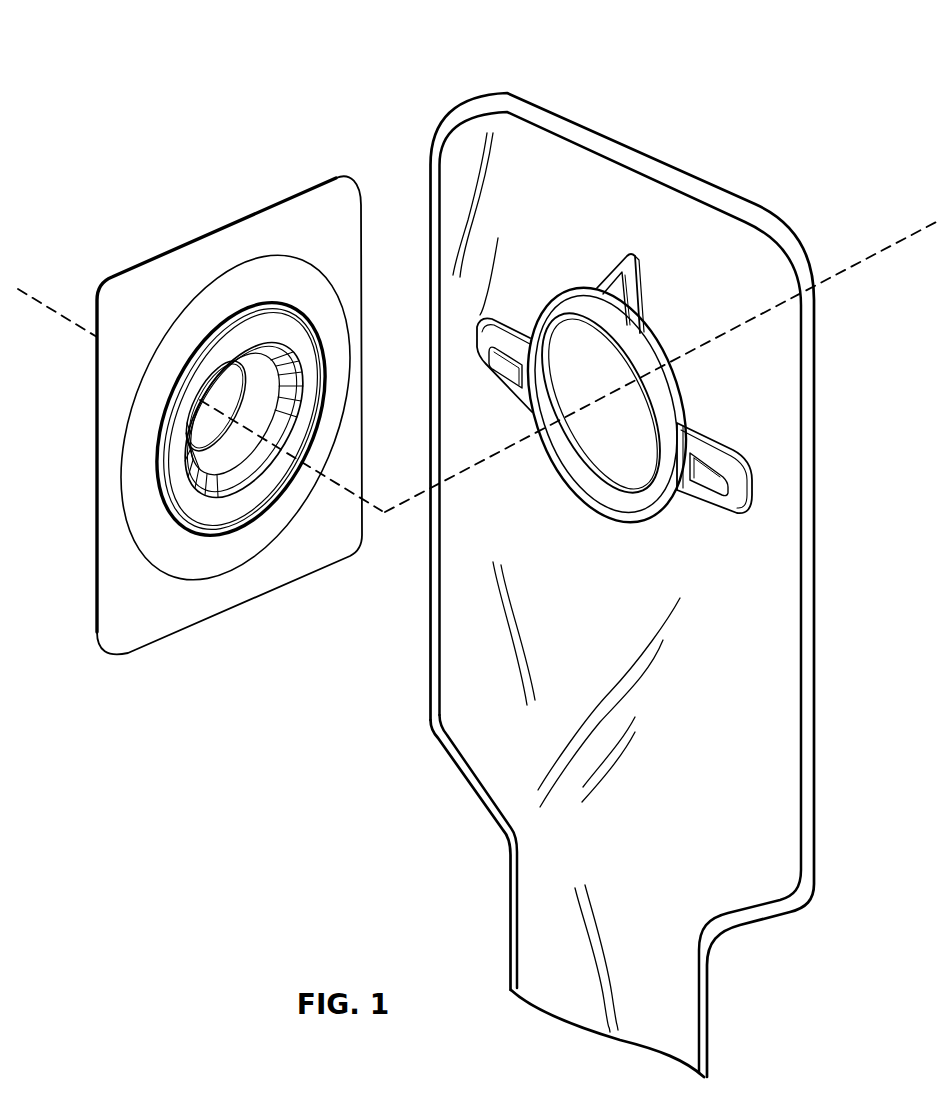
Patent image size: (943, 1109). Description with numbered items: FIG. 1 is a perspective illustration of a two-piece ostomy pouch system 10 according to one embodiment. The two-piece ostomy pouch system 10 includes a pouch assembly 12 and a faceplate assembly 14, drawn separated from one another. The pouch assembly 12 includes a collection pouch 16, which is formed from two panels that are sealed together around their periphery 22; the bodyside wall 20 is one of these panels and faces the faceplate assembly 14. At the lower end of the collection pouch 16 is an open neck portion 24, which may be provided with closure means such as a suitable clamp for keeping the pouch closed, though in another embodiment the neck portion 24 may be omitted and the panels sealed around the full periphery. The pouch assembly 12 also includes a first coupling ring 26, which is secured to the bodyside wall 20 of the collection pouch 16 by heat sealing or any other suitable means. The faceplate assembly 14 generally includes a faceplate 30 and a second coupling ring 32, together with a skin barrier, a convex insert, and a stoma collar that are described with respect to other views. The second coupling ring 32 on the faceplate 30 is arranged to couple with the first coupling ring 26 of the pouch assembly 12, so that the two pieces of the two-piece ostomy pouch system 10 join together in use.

The two-piece ostomy pouch system 10 is at (351, 63).
The pouch assembly 12 is at (774, 151).
The faceplate assembly 14 is at (209, 625).
The collection pouch 16 is at (725, 400).
The bodyside wall 20 is at (770, 638).
The periphery 22 is at (808, 497).
The open neck portion 24 is at (644, 1023).
The first coupling ring 26 is at (557, 477).
The faceplate 30 is at (112, 622).
The second coupling ring 32 is at (272, 500).